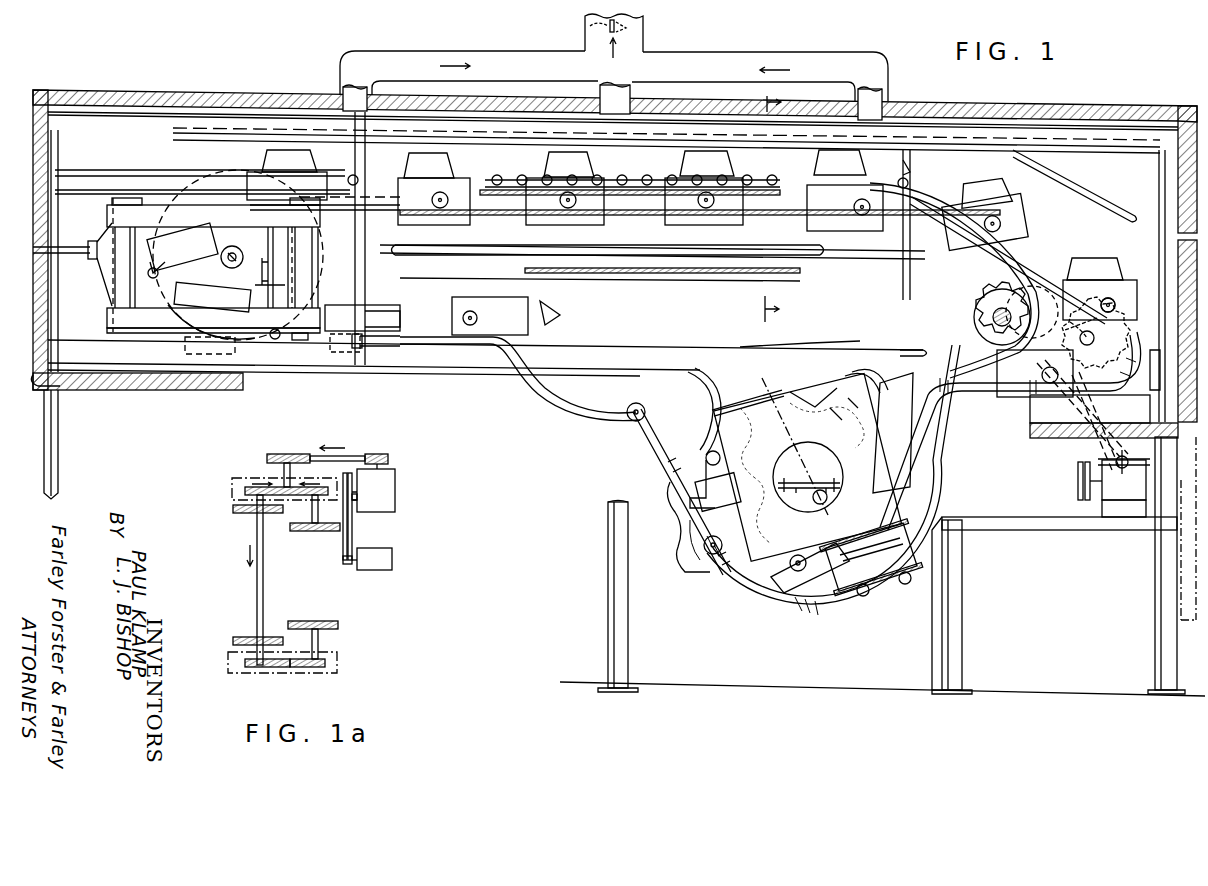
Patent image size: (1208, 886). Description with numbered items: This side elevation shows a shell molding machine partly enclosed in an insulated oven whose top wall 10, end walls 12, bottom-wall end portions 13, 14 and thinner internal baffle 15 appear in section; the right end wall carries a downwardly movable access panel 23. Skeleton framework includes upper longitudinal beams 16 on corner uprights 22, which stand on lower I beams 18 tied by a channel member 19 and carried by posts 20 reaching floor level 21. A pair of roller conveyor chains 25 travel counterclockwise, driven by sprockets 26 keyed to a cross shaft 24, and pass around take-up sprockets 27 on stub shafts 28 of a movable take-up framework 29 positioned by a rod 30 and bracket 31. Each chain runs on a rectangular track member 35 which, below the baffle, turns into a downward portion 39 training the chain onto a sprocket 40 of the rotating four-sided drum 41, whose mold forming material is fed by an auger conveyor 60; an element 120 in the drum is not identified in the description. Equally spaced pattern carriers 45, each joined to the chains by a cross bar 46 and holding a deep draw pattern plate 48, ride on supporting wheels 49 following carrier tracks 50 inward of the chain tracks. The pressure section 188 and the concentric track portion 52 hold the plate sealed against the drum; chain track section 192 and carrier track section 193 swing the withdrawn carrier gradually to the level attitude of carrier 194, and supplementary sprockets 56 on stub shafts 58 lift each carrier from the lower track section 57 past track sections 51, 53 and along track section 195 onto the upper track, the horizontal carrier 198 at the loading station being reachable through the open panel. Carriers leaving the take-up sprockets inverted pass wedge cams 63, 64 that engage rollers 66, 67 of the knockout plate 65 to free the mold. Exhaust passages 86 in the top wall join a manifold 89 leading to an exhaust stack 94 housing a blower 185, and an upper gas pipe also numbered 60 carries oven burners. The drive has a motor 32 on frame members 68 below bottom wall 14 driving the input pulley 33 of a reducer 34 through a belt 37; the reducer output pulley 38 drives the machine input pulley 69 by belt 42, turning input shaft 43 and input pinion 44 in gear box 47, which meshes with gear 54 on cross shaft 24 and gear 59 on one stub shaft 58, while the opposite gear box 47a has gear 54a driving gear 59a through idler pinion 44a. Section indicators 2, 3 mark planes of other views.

In FIG. 1, the top wall 10 is at (928, 114).
In FIG. 1, the end walls 12 is at (58, 406).
In FIG. 1, the left end portion of bottom wall 13 is at (210, 392).
In FIG. 1, the right end portion of bottom wall 14 is at (1030, 434).
In FIG. 1, the internal baffle 15 is at (702, 276).
In FIG. 1, the upper longitudinal side beams 16 is at (160, 128).
In FIG. 1, the lower longitudinal I beams 18 is at (414, 366).
In FIG. 1, the channel member 19 is at (1152, 390).
In FIG. 1, the section line 2 is at (793, 202).
In FIG. 1, the posts 20 is at (58, 476).
In FIG. 1, the floor level 21 is at (1088, 694).
In FIG. 1, the corner upright members 22 is at (1162, 184).
In FIG. 1, the access panel 23 is at (1180, 264).
In FIG. 1, the cross shaft 24 is at (998, 320).
In FIG. 1a, the cross shaft 24 is at (257, 587).
In FIG. 1, the roller type conveyor chains 25 is at (618, 182).
In FIG. 1, the driving sprockets 26 is at (975, 320).
In FIG. 1a, the driving sprockets 26 is at (240, 513).
In FIG. 1, the take-up sprockets 27 is at (232, 262).
In FIG. 1, the stub shafts 28 is at (227, 260).
In FIG. 1, the movable take-up framework 29 is at (107, 216).
In FIG. 1, the section line 3 is at (758, 385).
In FIG. 1, the rod 30 is at (90, 256).
In FIG. 1, the bracket 31 is at (106, 278).
In FIG. 1a, the motor 32 is at (372, 570).
In FIG. 1, the input pulley 33 is at (1078, 482).
In FIG. 1a, the input pulley 33 is at (358, 500).
In FIG. 1, the reducer 34 is at (1139, 499).
In FIG. 1a, the reducer 34 is at (390, 496).
In FIG. 1, the track member 35 is at (614, 196).
In FIG. 1, the belt 37 is at (1082, 500).
In FIG. 1a, the belt 37 is at (345, 560).
In FIG. 1, the output pulley 38 is at (1124, 509).
In FIG. 1a, the output pulley 38 is at (386, 457).
In FIG. 1, the downwardly directed portion 39 is at (702, 478).
In FIG. 1, the sprocket 40 is at (796, 567).
In FIG. 1, the four-sided drum 41 is at (736, 411).
In FIG. 1, the belt 42 is at (1102, 461).
In FIG. 1a, the belt 42 is at (362, 456).
In FIG. 1a, the input shaft 43 is at (284, 472).
In FIG. 1, the input pinion 44 is at (1042, 354).
In FIG. 1a, the input pinion 44 is at (310, 497).
In FIG. 1a, the pinion 44a is at (300, 668).
In FIG. 1, the pattern carriers 45 is at (1028, 235).
In FIG. 1, the cross bar 46 is at (845, 557).
In FIG. 1a, the gear box 47 is at (232, 493).
In FIG. 1a, the gear box 47a is at (232, 659).
In FIG. 1, the pattern plate 48 is at (740, 174).
In FIG. 1, the supporting wheels 49 is at (849, 216).
In FIG. 1, the supporting tracks 50 is at (622, 216).
In FIG. 1, the track sections 51 is at (1145, 376).
In FIG. 1, the portion of supporting track 52 is at (840, 607).
In FIG. 1, the track sections 53 is at (1120, 310).
In FIG. 1, the gear 54 is at (988, 294).
In FIG. 1a, the gear 54 is at (250, 487).
In FIG. 1a, the gear 54a is at (262, 668).
In FIG. 1, the supplementary sprockets 56 is at (1096, 332).
In FIG. 1a, the supplementary sprockets 56 is at (316, 532).
In FIG. 1, the lower carrier supporting track section 57 is at (984, 398).
In FIG. 1a, the stub shafts 58 is at (312, 528).
In FIG. 1, the gear 59 is at (1124, 322).
In FIG. 1a, the gear 59 is at (352, 520).
In FIG. 1a, the gear 59a is at (327, 667).
In FIG. 1, the auger conveyor 60 is at (1074, 186).
In FIG. 1, the wedge shaped cams 63 is at (262, 281).
In FIG. 1, the wedge shaped cams 64 is at (362, 301).
In FIG. 1, the knockout plate 65 is at (876, 593).
In FIG. 1, the rollers 66 is at (878, 592).
In FIG. 1, the rollers 67 is at (918, 578).
In FIG. 1, the supporting frame members 68 is at (1088, 532).
In FIG. 1a, the input pulley 69 is at (290, 454).
In FIG. 1, the exhaust passages 86 is at (350, 92).
In FIG. 1, the manifold 89 is at (758, 64).
In FIG. 1, the exhaust stack 94 is at (648, 46).
In FIG. 1, the drum 120 is at (782, 442).
In FIG. 1, the blower 185 is at (588, 24).
In FIG. 1, the pressure section 188 is at (680, 524).
In FIG. 1, the chain supporting track section 192 is at (950, 473).
In FIG. 1, the carrier supporting track section 193 is at (950, 452).
In FIG. 1, the carrier 194 is at (1034, 406).
In FIG. 1, the section of supporting track 195 is at (1060, 276).
In FIG. 1, the carrier 198 is at (1128, 290).